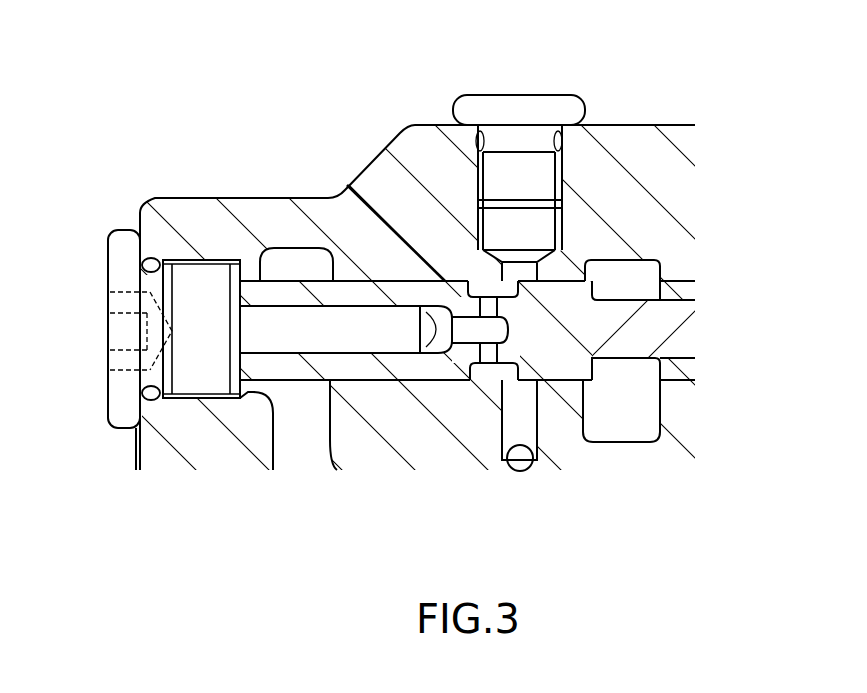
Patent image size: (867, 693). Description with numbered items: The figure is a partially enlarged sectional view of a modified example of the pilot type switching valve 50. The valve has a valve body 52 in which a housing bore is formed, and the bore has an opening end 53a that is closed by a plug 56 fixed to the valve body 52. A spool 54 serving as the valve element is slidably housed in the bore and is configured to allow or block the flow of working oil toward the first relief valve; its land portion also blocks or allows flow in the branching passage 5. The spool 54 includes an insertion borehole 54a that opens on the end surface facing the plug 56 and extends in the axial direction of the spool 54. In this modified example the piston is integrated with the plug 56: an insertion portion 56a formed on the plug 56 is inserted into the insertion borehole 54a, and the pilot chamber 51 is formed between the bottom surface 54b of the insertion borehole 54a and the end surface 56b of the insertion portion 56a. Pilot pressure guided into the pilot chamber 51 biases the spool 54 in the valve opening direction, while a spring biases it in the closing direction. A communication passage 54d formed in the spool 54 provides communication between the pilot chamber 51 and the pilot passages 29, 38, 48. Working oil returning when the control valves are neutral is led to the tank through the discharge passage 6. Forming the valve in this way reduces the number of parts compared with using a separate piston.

The pilot type switching valve 50 is at (283, 99).
The spool 54 is at (565, 281).
The insertion borehole 54a is at (290, 320).
The bottom surface 54b is at (430, 282).
The communication passage 54d is at (467, 282).
The plug 56 is at (200, 330).
The insertion portion 56a is at (263, 320).
The end surface 56b is at (433, 300).
The pilot chamber 51 is at (380, 177).
The valve body 52 is at (388, 418).
The opening end 53a is at (143, 258).
The discharge passage 6 is at (301, 448).
The pin 29 is at (527, 458).
The pilot passage 38 is at (527, 458).
The pilot passage 48 is at (525, 430).
The branching passage 5 is at (618, 403).